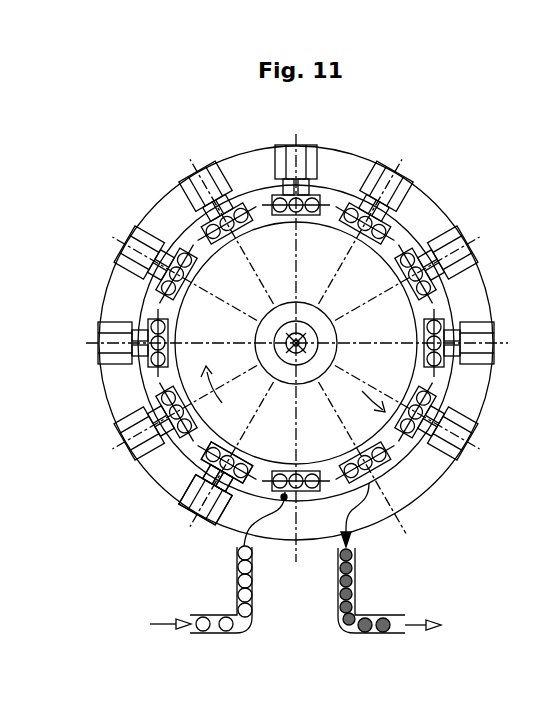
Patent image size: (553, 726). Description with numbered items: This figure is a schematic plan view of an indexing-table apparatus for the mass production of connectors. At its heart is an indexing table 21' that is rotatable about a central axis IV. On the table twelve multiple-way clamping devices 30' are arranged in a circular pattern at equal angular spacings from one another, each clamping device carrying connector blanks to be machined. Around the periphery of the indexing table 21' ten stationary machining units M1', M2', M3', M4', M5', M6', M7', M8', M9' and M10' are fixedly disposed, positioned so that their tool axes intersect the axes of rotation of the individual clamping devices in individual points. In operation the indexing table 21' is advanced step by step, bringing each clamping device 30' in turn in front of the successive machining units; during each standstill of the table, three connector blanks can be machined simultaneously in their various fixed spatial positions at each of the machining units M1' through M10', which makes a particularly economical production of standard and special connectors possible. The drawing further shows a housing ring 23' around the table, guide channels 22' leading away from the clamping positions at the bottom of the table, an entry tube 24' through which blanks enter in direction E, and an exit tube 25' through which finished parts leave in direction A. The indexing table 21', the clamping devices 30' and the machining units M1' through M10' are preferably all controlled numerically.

The indexing table 21' is at (361, 343).
The guide channel 22' is at (306, 548).
The housing ring 23' is at (296, 348).
The entry tube 24' is at (221, 621).
The exit tube 25' is at (371, 622).
The multiple-way clamping device 30' is at (278, 426).
The axis IV is at (312, 333).
The machining unit M1' is at (209, 454).
The machining unit M2' is at (167, 407).
The machining unit M3' is at (112, 343).
The machining unit M4' is at (183, 277).
The machining unit M5' is at (232, 226).
The machining unit M6' is at (305, 160).
The machining unit M7' is at (360, 227).
The machining unit M8' is at (413, 278).
The machining unit M9' is at (487, 343).
The machining unit M10' is at (430, 407).
The inlet direction E is at (157, 626).
The outlet direction A is at (433, 627).